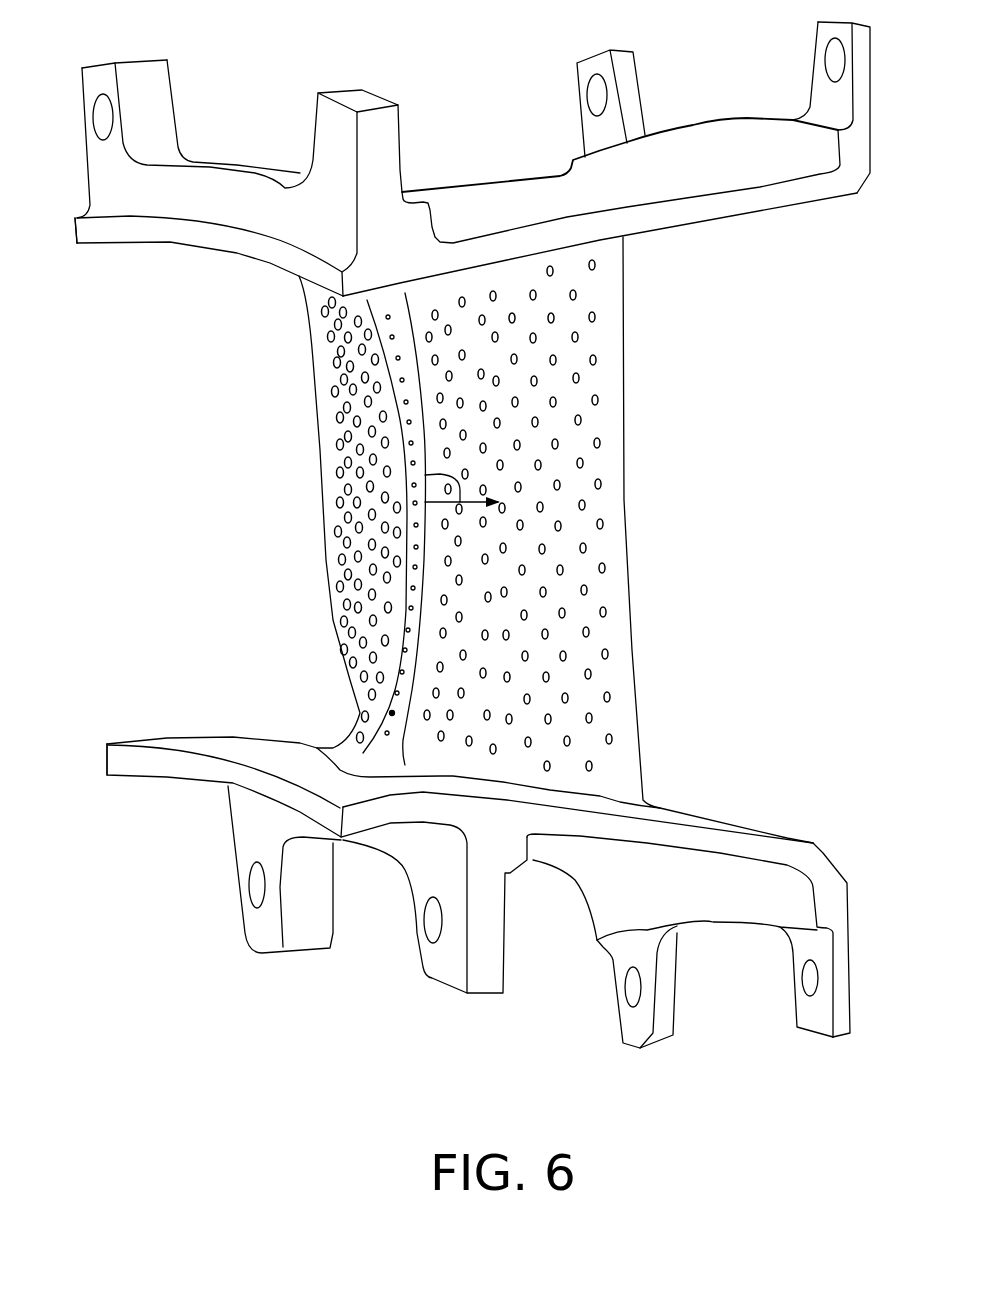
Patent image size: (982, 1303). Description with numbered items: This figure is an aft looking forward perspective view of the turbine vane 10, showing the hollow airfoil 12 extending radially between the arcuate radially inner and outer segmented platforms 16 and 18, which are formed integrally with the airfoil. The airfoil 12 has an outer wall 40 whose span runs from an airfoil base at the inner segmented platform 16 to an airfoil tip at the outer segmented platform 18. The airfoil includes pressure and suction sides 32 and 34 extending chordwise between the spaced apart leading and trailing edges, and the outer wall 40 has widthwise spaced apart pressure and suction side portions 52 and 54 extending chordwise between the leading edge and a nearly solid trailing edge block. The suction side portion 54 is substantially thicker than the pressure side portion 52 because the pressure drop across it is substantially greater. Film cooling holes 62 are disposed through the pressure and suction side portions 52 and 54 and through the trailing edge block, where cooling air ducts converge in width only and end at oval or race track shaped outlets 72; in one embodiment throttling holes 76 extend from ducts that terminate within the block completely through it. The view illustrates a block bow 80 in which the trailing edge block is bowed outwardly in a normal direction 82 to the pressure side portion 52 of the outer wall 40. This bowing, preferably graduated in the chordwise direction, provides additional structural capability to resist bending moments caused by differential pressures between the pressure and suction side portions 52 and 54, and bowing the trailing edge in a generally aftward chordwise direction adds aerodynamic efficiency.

The turbine vane 10 is at (183, 1022).
The hollow airfoil 12 is at (600, 287).
The radially inner segmented platform 16 is at (760, 847).
The radially outer segmented platform 18 is at (803, 193).
The pressure side 32 is at (570, 350).
The suction side 34 is at (333, 352).
The outer wall 40 is at (578, 610).
The pressure side portion 52 is at (622, 668).
The suction side portion 54 is at (333, 607).
The film cooling holes 62 is at (581, 420).
The outlets 72 is at (392, 712).
The throttling holes 76 is at (405, 462).
The block bow 80 is at (405, 538).
The normal direction 82 is at (405, 475).